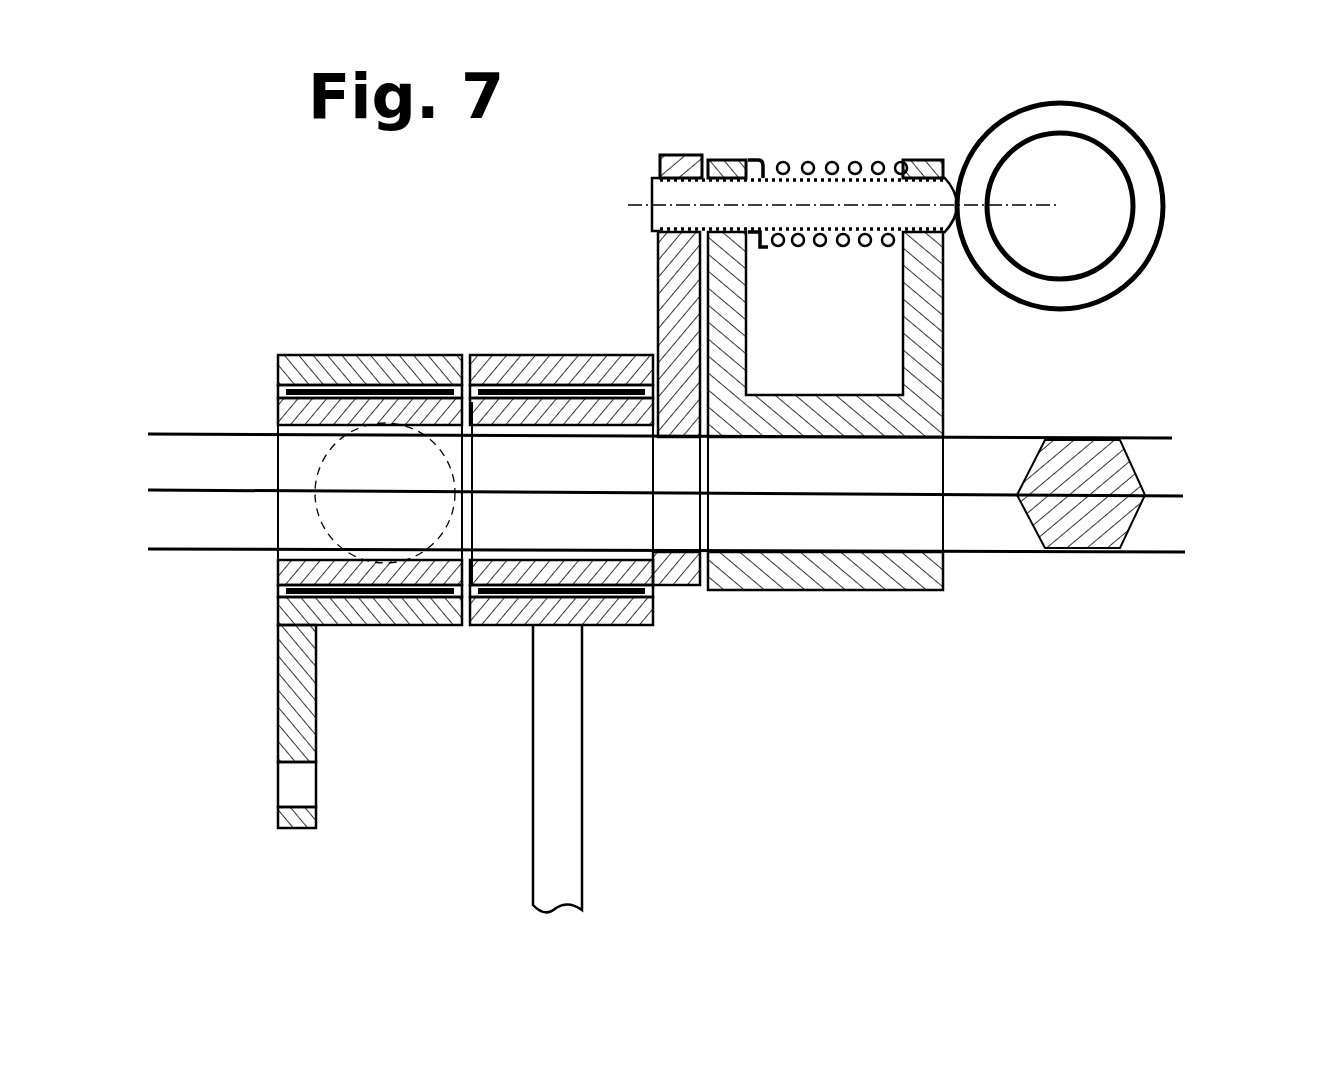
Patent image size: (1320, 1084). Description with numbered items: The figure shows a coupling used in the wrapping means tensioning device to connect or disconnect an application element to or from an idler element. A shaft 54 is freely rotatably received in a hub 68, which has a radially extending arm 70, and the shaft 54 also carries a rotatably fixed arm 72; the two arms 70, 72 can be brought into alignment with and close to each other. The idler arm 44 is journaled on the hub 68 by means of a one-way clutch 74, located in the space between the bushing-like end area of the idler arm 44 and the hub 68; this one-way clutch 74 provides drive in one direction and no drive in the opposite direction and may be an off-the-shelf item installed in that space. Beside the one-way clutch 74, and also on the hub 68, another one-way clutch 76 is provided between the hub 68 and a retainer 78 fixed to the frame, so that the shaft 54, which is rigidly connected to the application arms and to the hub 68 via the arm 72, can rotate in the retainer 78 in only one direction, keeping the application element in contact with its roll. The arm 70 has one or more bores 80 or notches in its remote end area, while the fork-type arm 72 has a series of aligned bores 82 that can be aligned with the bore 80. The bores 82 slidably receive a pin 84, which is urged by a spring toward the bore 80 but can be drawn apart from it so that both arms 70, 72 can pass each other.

The idler linkage 44 is at (565, 875).
The shaft 54 is at (1163, 463).
The hub 68 is at (682, 575).
The arm 70 is at (658, 295).
The arm 72 is at (908, 578).
The one-way clutch 74 is at (470, 672).
The one-way clutch 76 is at (240, 383).
The retainer 78 is at (278, 703).
The bore 80 is at (676, 167).
The bores 82 is at (872, 168).
The pin 84 is at (1143, 253).